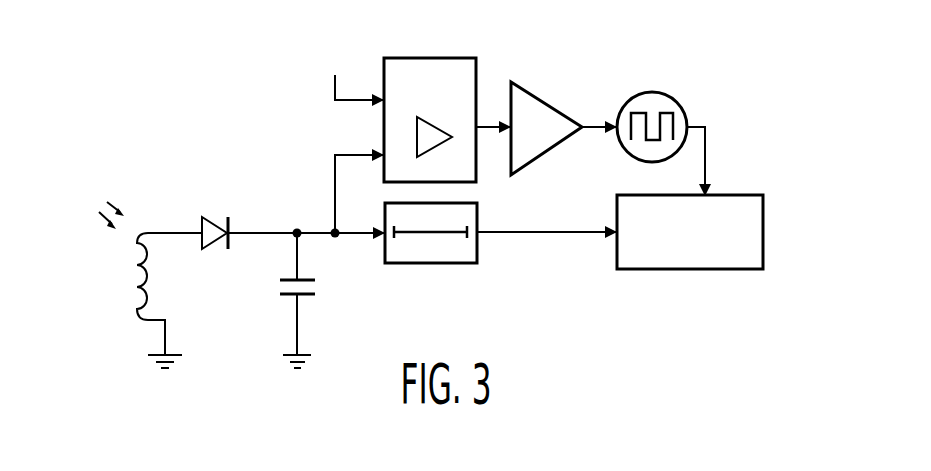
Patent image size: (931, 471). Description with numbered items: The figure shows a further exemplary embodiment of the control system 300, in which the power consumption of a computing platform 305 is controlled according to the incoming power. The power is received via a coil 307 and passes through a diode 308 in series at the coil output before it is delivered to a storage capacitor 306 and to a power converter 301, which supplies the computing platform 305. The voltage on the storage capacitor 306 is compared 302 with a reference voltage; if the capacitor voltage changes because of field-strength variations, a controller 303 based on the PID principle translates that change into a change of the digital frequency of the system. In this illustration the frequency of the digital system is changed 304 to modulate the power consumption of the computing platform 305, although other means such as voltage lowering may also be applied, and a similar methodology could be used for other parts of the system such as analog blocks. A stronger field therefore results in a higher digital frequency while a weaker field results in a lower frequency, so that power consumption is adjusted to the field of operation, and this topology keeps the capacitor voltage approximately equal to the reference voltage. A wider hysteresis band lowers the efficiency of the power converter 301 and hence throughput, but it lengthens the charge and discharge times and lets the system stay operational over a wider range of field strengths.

The control system 300 is at (765, 77).
The power converter 301 is at (479, 252).
The comparison of capacitor voltage with reference voltage 302 is at (384, 126).
The controller 303 is at (536, 82).
The frequency change of the digital system 304 is at (685, 104).
The computing platform 305 is at (670, 270).
The storage capacitor 306 is at (284, 297).
The coil 307 is at (130, 290).
The diode 308 is at (213, 218).